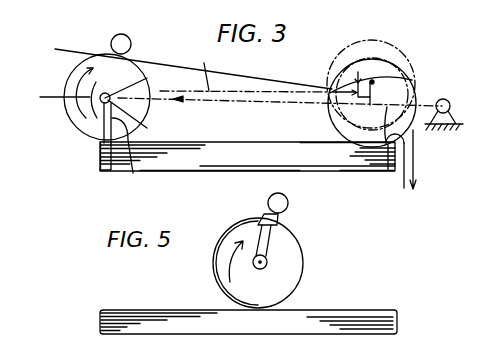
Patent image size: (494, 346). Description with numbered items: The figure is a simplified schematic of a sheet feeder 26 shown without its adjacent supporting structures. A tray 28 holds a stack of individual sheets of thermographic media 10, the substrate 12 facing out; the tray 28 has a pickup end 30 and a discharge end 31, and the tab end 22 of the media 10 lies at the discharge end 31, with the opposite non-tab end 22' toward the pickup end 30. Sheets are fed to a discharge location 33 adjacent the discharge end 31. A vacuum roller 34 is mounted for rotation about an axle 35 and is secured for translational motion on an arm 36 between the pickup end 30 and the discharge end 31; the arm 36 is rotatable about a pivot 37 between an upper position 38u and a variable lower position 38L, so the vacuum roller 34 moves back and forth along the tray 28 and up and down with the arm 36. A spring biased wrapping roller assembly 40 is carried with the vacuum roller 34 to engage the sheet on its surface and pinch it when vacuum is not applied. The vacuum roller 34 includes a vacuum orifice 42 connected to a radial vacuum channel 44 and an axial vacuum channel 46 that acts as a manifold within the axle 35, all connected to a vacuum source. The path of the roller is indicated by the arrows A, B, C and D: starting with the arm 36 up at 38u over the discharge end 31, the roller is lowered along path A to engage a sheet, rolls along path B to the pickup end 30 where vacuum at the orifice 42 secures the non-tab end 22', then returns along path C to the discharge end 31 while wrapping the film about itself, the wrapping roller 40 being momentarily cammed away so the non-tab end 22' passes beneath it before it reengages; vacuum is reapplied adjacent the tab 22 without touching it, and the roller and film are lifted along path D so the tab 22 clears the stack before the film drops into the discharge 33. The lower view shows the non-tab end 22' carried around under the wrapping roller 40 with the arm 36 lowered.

The thermographic media 10 is at (238, 143).
The substrate 12 is at (318, 144).
The tab end 22 is at (425, 198).
The non-tab end 22' is at (72, 165).
The sheet feeder 26 is at (416, 44).
The tray 28 is at (197, 171).
The pickup end 30 is at (112, 172).
The discharge end 31 is at (366, 172).
The discharge location 33 is at (415, 163).
The vacuum roller 34 is at (70, 73).
The axle 35 is at (148, 78).
The arm 36 is at (384, 173).
The pivot 37 is at (450, 101).
The upper position 38u is at (87, 50).
The lower position 38L is at (49, 98).
The wrapping roller assembly 40 is at (131, 38).
The vacuum orifice 42 is at (115, 84).
The radial vacuum channel 44 is at (133, 174).
The axial vacuum channel 46 is at (137, 126).
The path A is at (410, 80).
The path B is at (245, 101).
The path C is at (205, 63).
The path D is at (331, 87).